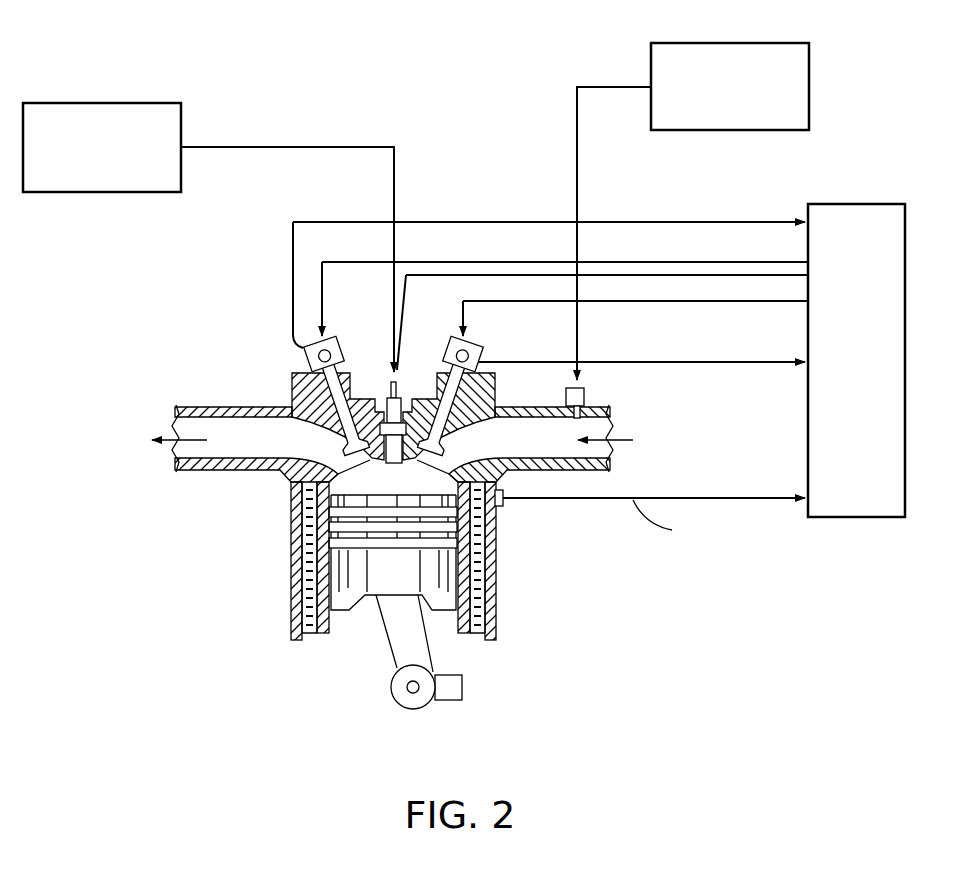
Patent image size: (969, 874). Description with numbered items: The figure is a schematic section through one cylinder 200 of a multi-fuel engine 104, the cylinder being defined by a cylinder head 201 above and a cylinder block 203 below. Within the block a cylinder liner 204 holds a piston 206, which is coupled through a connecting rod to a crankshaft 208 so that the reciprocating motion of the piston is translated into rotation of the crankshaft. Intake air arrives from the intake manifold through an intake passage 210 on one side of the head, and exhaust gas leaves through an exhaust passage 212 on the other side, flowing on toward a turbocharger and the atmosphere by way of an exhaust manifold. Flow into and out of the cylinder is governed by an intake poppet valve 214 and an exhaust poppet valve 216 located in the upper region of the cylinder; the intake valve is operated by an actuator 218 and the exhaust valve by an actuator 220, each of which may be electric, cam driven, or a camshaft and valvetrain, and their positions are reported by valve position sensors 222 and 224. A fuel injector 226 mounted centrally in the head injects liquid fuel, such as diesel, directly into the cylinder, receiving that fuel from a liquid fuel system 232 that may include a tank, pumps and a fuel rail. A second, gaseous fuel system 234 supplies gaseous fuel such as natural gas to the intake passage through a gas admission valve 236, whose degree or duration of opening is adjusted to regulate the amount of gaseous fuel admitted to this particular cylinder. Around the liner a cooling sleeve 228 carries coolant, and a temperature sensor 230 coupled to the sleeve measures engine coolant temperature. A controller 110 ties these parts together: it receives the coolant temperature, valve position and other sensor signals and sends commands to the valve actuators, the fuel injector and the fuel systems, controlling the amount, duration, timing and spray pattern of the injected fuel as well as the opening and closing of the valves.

The engine 104 is at (432, 198).
The controller 110 is at (841, 372).
The cylinder 200 is at (376, 493).
The cylinder head 201 is at (228, 334).
The cylinder block 203 is at (552, 580).
The cylinder liner 204 is at (334, 622).
The piston 206 is at (375, 580).
The crankshaft 208 is at (436, 675).
The intake passage 210 is at (509, 447).
The exhaust passage 212 is at (256, 447).
The intake poppet valve 214 is at (480, 425).
The exhaust poppet valve 216 is at (343, 440).
The actuator 218 is at (452, 342).
The actuator 220 is at (334, 340).
The valve position sensor 222 is at (480, 360).
The valve position sensor 224 is at (302, 347).
The fuel injector 226 is at (387, 395).
The cooling sleeve 228 is at (477, 582).
The temperature sensor 230 is at (504, 506).
The liquid fuel system 232 is at (88, 181).
The gaseous fuel system 234 is at (716, 120).
The gas admission valve 236 is at (585, 396).